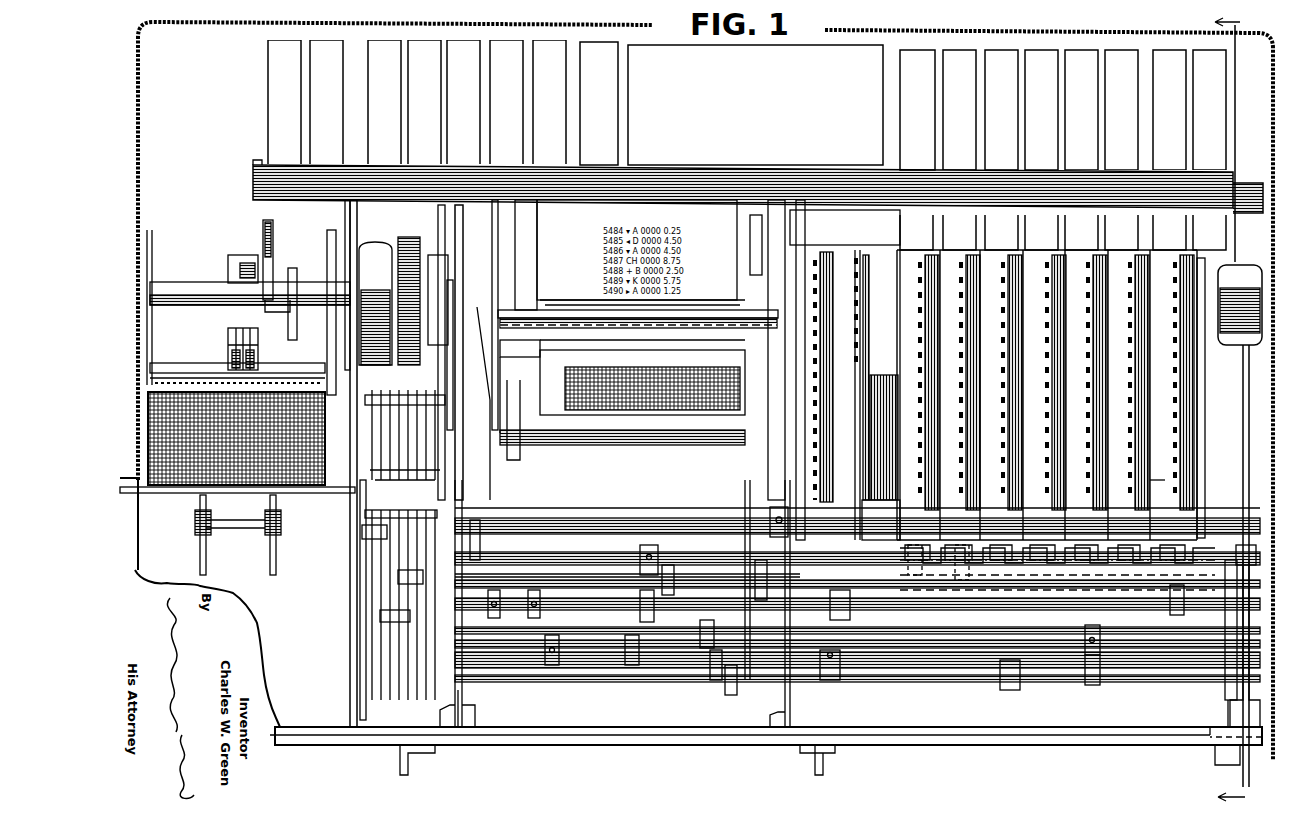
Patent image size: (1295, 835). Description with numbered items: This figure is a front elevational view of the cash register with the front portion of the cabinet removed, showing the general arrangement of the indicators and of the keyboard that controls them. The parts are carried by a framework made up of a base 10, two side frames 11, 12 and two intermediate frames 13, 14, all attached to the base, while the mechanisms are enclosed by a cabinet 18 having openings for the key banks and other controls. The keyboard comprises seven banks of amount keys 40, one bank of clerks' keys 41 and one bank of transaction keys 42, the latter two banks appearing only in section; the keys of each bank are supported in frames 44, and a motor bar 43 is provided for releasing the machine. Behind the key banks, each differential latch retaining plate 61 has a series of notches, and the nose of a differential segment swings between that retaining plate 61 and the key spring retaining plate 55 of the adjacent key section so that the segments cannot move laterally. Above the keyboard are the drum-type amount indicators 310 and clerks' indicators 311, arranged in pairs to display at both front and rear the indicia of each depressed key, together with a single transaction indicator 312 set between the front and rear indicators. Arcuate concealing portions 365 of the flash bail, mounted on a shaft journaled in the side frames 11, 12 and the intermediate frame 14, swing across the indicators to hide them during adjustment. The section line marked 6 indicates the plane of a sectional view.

The cabinet 18 is at (212, 32).
The amount indicators 310 is at (330, 42).
The clerks' indicators 311 is at (592, 42).
The transaction indicator 312 is at (866, 50).
The concealing portions 365 is at (648, 170).
The section line 6- 6 is at (1239, 409).
The transaction keys 42 is at (818, 323).
The clerks' keys 41 is at (866, 350).
The key frames 44 is at (830, 441).
The differential latch retaining plate 61 is at (1098, 396).
The amount keys 40 is at (923, 448).
The key spring retaining plate 55 is at (978, 518).
The motor bar 43 is at (1220, 335).
The side frame 11 is at (350, 603).
The intermediate frame 13 is at (455, 690).
The intermediate frame 14 is at (790, 700).
The base 10 is at (921, 745).
The side frame 12 is at (1242, 700).